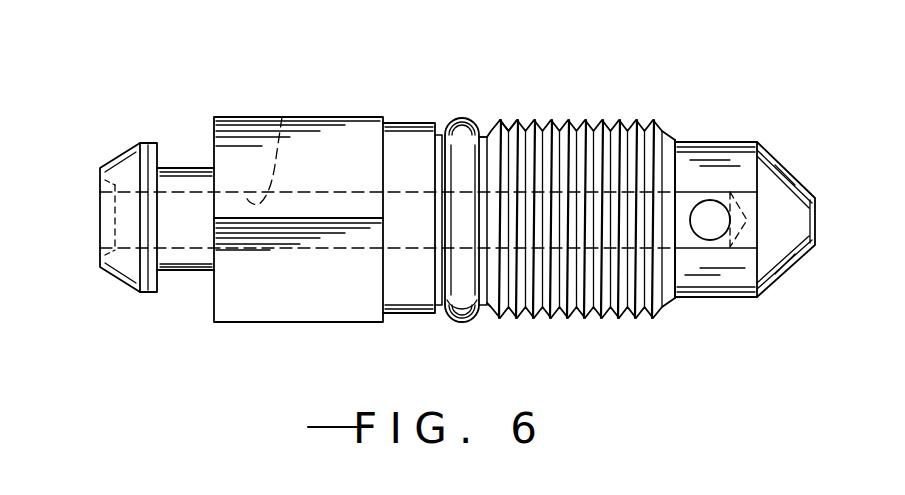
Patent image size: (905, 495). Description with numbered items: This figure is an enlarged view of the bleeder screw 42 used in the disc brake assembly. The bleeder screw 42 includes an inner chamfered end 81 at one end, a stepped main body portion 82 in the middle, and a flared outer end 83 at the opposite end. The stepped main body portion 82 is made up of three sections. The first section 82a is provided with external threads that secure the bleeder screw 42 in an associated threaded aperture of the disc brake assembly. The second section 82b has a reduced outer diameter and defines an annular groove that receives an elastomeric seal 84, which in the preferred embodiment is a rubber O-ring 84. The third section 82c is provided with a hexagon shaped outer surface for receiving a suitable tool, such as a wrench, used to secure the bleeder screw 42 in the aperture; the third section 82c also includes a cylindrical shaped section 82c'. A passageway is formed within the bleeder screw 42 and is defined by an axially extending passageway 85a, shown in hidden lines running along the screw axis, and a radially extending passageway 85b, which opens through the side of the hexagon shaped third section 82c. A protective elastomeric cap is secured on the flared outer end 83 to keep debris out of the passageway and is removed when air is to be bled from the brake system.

The bleeder screw 42 is at (482, 101).
The inner chamfered end 81 is at (812, 222).
The stepped main body portion 82 is at (541, 320).
The first section 82a is at (566, 119).
The second section 82b is at (485, 320).
The third section 82c is at (291, 255).
The cylindrical shaped section 82c' is at (386, 255).
The flared outer end 83 is at (99, 232).
The elastomeric seal 84 is at (459, 114).
The axially extending passageway 85a is at (283, 115).
The radially extending passageway 85b is at (711, 233).